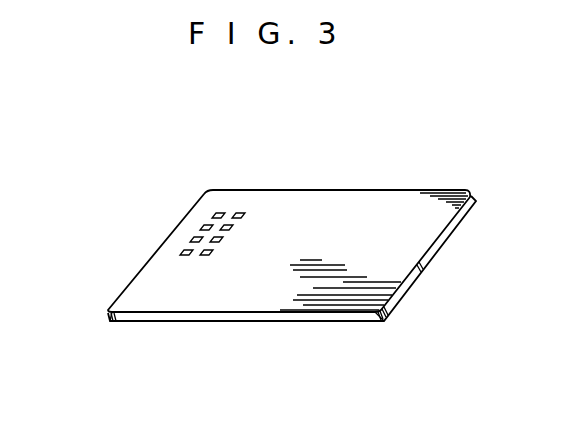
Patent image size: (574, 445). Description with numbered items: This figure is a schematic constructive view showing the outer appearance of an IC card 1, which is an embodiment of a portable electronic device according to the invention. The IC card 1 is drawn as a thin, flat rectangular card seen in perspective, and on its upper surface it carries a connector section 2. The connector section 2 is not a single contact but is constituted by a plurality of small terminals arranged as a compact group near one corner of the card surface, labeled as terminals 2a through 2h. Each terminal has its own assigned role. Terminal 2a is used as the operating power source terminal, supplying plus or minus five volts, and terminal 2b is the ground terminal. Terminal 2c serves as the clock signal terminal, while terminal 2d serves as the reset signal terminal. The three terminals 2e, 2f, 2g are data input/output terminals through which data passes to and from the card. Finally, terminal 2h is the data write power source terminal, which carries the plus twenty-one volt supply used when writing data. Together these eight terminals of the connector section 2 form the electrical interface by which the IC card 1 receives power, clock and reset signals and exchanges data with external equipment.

The IC card 1 is at (424, 241).
The connector section 2 is at (238, 198).
The operating power source terminal 2a is at (213, 214).
The ground terminal 2b is at (245, 214).
The clock signal terminal 2c is at (201, 226).
The reset signal terminal 2d is at (233, 228).
The data input/output terminal 2e is at (191, 240).
The data input/output terminal 2f is at (222, 240).
The data input/output terminal 2g is at (181, 253).
The data write power source terminal 2h is at (207, 256).